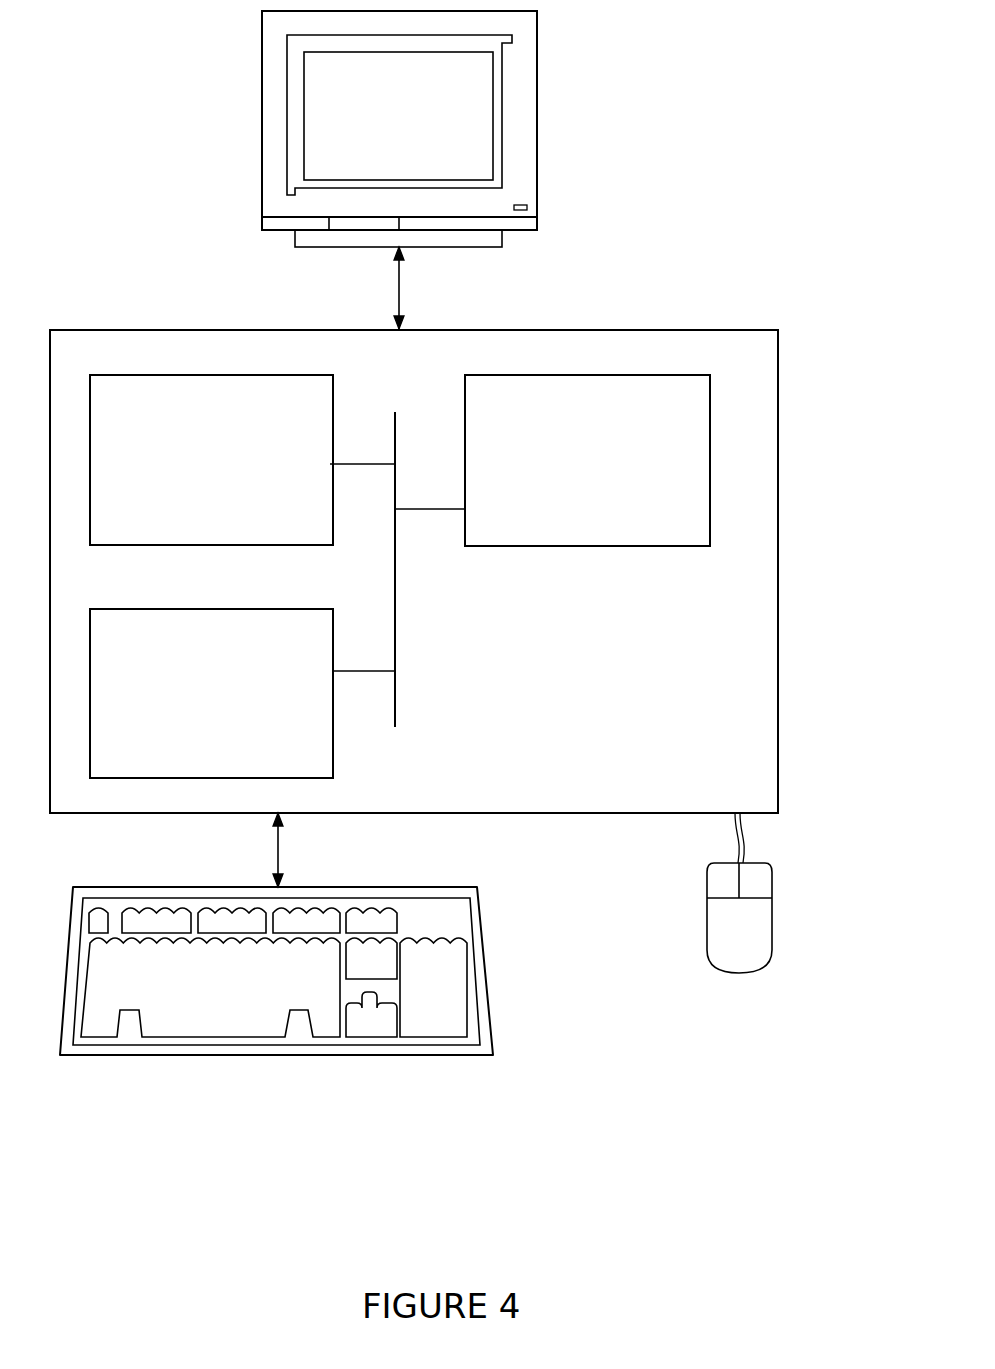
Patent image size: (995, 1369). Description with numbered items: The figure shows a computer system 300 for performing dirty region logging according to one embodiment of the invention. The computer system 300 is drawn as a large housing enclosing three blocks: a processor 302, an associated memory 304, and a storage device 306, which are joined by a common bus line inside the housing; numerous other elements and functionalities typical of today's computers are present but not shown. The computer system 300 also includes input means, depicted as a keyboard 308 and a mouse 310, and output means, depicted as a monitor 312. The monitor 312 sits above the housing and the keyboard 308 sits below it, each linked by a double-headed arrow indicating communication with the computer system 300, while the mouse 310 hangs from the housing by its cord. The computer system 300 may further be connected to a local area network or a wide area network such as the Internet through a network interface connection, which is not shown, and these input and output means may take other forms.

The computer system 300 is at (800, 176).
The processor 302 is at (585, 471).
The memory 304 is at (191, 472).
The storage device 306 is at (188, 706).
The keyboard 308 is at (181, 1012).
The mouse 310 is at (717, 942).
The monitor 312 is at (376, 132).